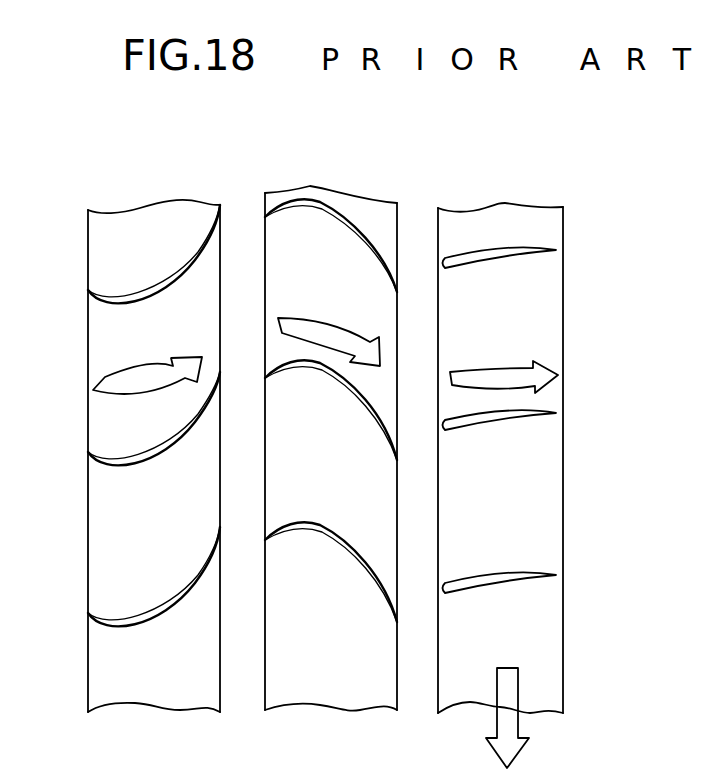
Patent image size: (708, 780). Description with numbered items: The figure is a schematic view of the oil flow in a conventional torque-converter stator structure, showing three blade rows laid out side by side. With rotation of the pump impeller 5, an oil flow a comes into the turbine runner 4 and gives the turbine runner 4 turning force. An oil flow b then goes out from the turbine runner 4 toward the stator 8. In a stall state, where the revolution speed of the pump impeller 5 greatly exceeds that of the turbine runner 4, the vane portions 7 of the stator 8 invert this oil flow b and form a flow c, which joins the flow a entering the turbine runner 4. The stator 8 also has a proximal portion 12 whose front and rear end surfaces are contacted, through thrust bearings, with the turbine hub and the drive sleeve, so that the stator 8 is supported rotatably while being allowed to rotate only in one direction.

The turbine runner 4 is at (161, 187).
The stator 8 is at (334, 178).
The pump impeller 5 is at (510, 186).
The vane portions 7 is at (362, 230).
The proximal portion 12 is at (393, 246).
The oil flow a is at (158, 382).
The oil flow b is at (345, 323).
The flow c is at (502, 372).